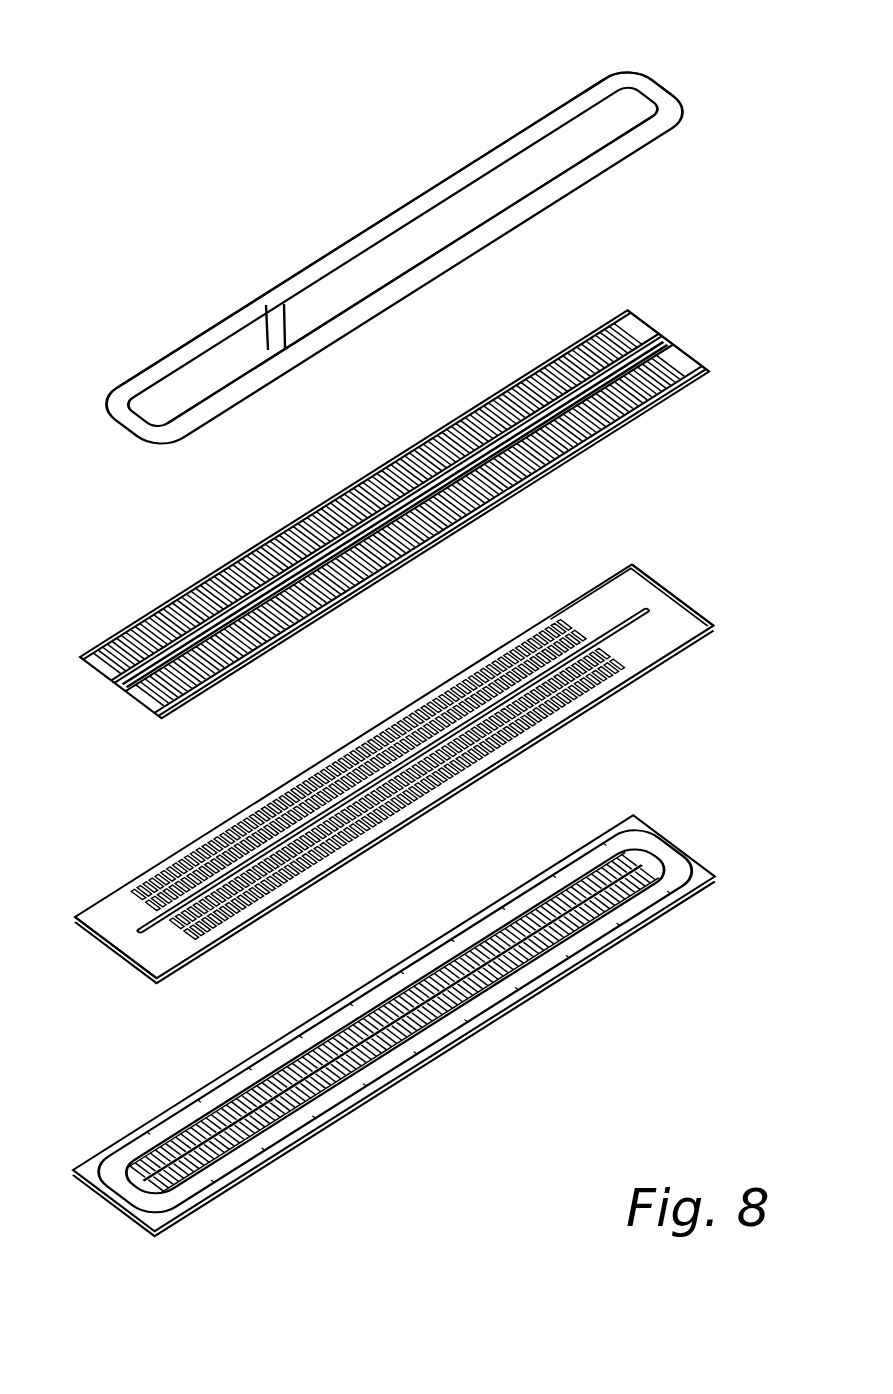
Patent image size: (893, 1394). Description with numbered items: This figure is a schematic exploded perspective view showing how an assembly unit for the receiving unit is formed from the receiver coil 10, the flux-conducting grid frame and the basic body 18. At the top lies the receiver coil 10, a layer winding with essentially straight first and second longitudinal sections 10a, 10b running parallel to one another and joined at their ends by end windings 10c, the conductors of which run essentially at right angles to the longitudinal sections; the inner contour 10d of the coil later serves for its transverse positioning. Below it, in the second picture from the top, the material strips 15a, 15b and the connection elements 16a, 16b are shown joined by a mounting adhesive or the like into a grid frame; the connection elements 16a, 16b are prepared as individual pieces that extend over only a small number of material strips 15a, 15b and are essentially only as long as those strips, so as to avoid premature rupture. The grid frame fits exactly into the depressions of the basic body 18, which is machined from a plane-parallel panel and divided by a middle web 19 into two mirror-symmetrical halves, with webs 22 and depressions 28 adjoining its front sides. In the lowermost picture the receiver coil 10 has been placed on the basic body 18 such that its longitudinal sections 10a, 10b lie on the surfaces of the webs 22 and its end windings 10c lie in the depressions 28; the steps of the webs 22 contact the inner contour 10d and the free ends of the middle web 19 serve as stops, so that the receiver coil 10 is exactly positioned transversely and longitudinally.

The receiver coil 10 is at (429, 172).
The first longitudinal section 10a is at (343, 247).
The second longitudinal section 10b is at (442, 283).
The end winding 10c is at (648, 96).
The inner contour 10d is at (571, 134).
The material strip 15a is at (642, 338).
The material strip 15b is at (690, 368).
The connection element 16a is at (193, 580).
The connection element 16b is at (477, 513).
The basic body 18 is at (402, 836).
The middle web 19 is at (657, 623).
The web 22 is at (557, 713).
The depression 28 is at (627, 590).